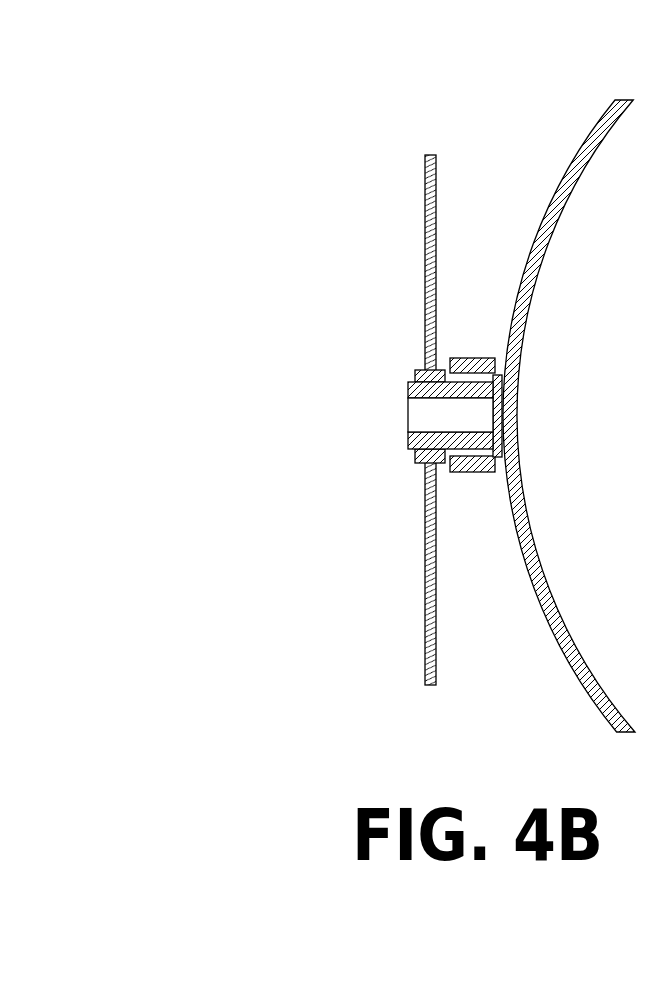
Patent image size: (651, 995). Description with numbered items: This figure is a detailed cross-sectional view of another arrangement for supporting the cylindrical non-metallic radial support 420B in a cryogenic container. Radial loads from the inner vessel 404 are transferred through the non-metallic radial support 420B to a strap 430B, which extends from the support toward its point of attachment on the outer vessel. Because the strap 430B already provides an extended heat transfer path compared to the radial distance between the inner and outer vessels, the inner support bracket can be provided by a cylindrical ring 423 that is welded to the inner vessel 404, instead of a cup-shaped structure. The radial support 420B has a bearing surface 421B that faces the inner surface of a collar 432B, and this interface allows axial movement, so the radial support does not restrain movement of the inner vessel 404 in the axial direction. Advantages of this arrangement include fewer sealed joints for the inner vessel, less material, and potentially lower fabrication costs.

The inner vessel 404 is at (553, 198).
The cylindrical ring 423 is at (472, 357).
The collar 432B is at (468, 370).
The bearing surface 421B is at (415, 372).
The non-metallic radial support 420B is at (408, 427).
The strap 430B is at (427, 548).